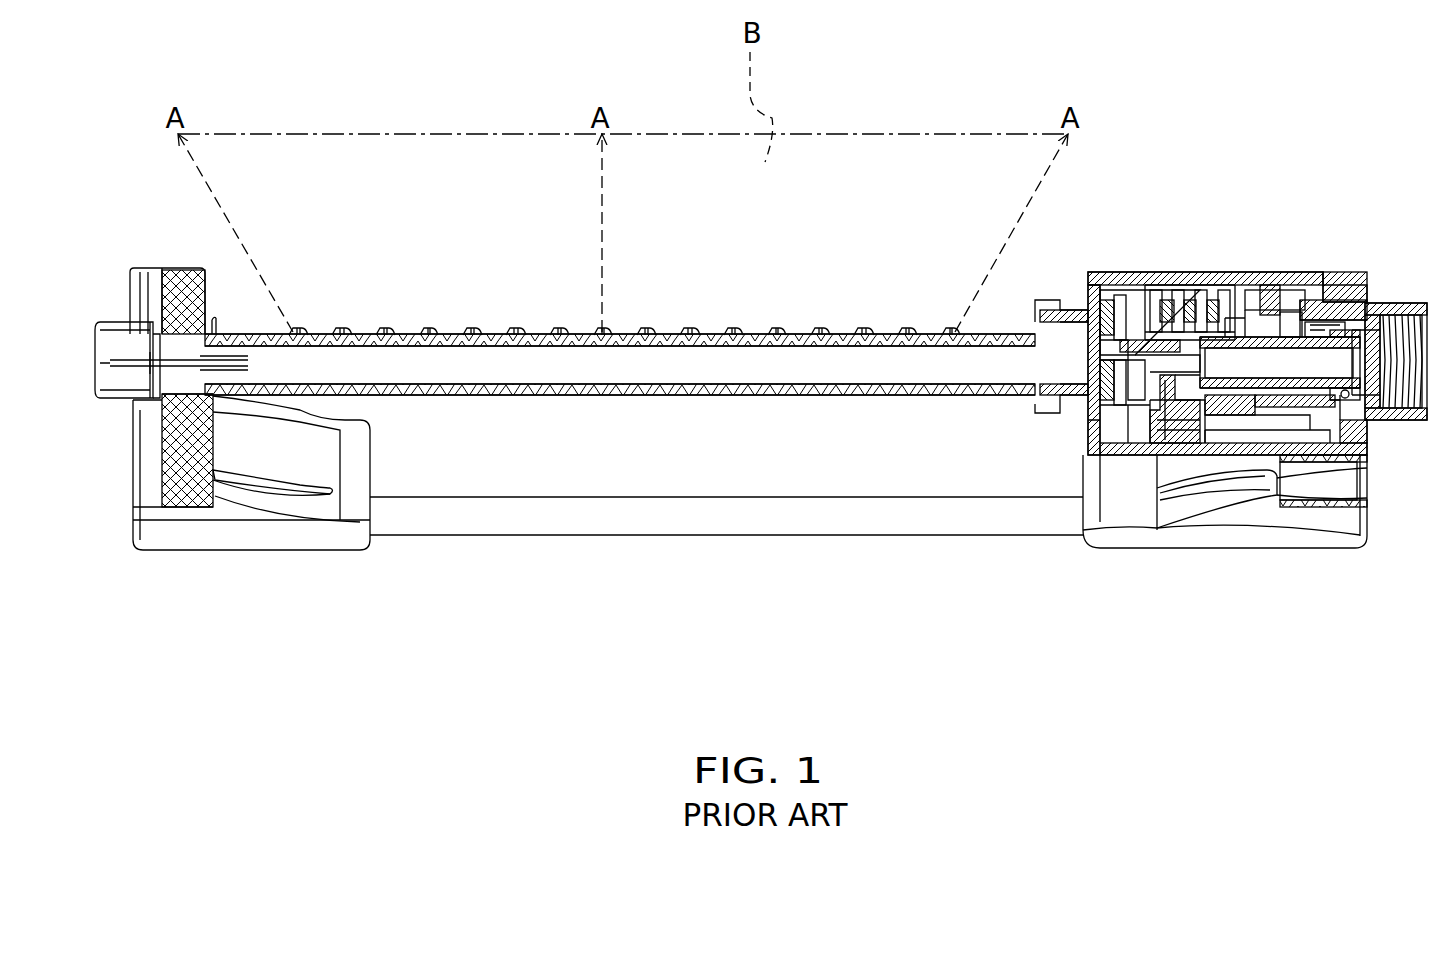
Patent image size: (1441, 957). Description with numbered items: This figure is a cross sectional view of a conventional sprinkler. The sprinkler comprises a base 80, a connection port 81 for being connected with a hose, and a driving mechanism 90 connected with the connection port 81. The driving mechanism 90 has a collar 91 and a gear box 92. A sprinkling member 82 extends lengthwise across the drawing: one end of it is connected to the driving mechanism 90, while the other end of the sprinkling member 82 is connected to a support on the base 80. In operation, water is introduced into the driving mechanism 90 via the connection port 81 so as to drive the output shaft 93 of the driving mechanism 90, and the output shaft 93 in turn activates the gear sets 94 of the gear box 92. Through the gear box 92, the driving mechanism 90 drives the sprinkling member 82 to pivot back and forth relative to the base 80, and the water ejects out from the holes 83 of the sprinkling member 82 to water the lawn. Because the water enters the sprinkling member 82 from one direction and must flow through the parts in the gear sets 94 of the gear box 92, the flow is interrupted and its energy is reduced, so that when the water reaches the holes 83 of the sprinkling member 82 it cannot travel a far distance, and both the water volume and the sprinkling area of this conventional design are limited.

The base 80 is at (1172, 552).
The connection port 81 is at (1385, 303).
The sprinkling member 82 is at (796, 397).
The holes 83 is at (428, 330).
The driving mechanism 90 is at (1250, 262).
The collar 91 is at (1303, 300).
The gear box 92 is at (1158, 296).
The output shaft 93 is at (1107, 300).
The gear sets 94 is at (1212, 290).